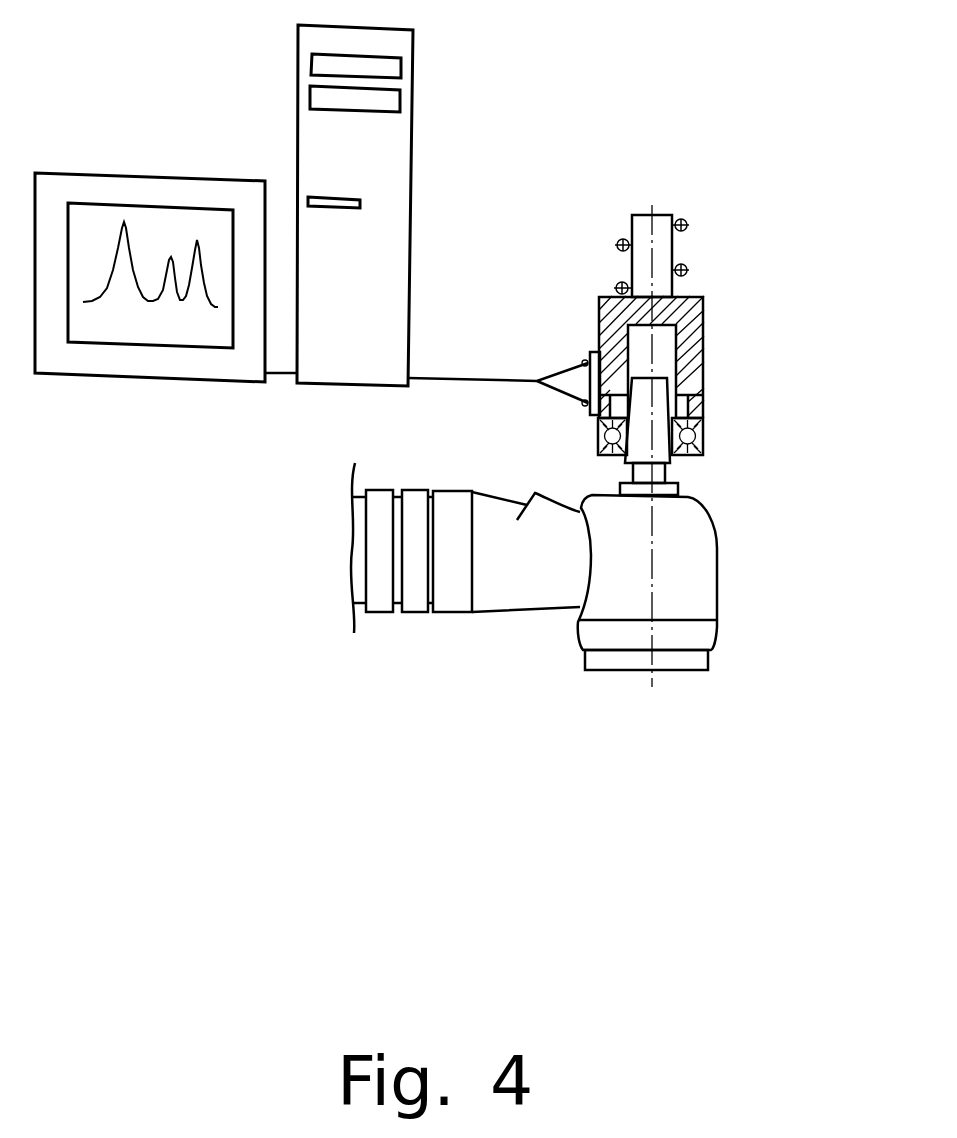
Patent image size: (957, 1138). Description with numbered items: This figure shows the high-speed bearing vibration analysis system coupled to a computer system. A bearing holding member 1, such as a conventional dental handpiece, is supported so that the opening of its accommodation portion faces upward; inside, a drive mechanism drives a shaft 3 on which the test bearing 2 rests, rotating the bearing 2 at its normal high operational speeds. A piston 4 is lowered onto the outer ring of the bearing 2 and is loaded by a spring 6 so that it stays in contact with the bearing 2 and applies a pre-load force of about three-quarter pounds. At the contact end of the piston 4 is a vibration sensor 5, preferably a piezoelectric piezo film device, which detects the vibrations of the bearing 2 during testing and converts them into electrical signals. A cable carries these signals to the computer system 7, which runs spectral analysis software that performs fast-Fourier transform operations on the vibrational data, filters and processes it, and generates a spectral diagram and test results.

The bearing holding member 1 is at (705, 603).
The test bearing 2 is at (565, 436).
The shaft 3 is at (702, 357).
The piston 4 is at (703, 300).
The vibration sensor 5 is at (590, 392).
The spring 6 is at (683, 223).
The computer system 7 is at (397, 193).